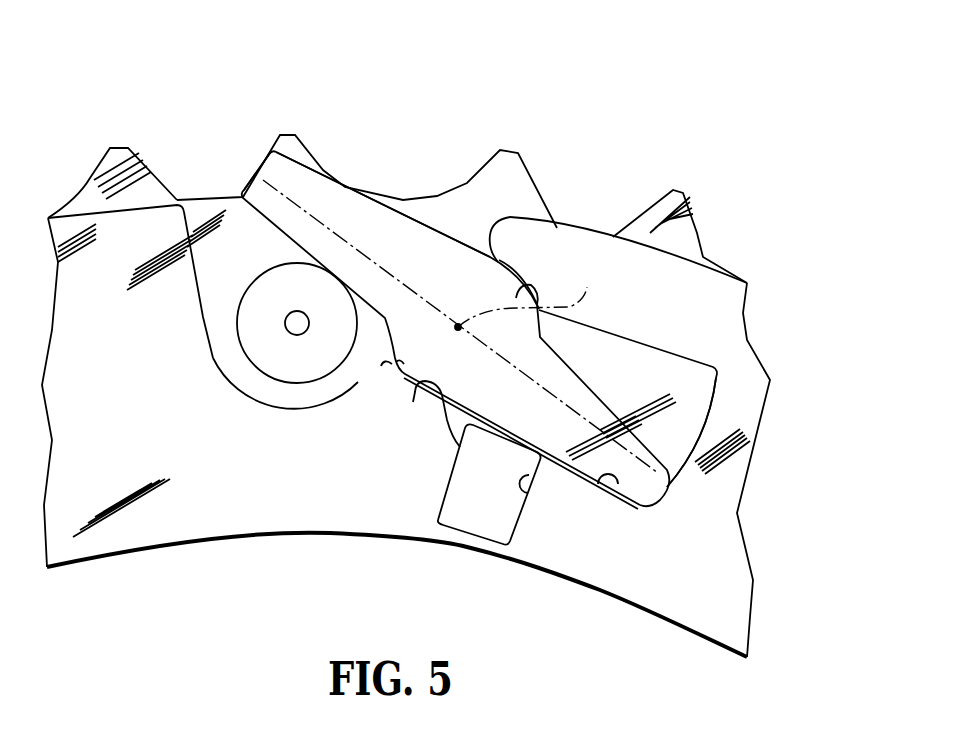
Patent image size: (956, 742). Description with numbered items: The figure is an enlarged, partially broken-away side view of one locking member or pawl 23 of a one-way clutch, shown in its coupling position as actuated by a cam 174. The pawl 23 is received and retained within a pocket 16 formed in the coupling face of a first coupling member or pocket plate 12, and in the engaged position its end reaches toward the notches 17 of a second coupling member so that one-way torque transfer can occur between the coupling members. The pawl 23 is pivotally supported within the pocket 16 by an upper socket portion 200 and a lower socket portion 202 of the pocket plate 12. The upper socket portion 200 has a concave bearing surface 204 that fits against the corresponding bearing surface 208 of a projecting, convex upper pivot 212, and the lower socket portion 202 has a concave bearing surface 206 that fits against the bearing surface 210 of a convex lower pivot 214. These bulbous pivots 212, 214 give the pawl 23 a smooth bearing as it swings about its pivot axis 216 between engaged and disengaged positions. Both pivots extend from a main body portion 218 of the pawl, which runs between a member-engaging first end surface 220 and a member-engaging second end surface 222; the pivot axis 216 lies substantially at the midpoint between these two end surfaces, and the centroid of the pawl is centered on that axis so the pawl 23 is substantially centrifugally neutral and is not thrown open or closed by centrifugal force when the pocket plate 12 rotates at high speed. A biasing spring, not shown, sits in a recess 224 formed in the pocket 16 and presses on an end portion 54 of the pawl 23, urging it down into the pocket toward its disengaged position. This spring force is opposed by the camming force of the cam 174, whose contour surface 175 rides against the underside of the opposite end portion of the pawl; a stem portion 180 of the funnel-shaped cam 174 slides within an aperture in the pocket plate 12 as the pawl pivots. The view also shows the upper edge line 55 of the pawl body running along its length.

The first coupling member 12 is at (735, 355).
The notches 17 is at (208, 175).
The upper socket portion 200 is at (505, 255).
The first end surface 220 is at (265, 172).
The lever arm upper edge 55 is at (323, 208).
The locking member 23 is at (433, 228).
The upper pivot 212 is at (505, 270).
The bearing surface of upper pivot 208 is at (520, 296).
The concave bearing surface 204 is at (537, 300).
The pivot axis 216 is at (535, 294).
The end portion 54 is at (540, 378).
The main body portion 218 is at (595, 400).
The second end surface 222 is at (670, 477).
The pocket 16 is at (618, 484).
The stem portion 180 is at (287, 325).
The contour surface 175 is at (273, 350).
The cam 174 is at (294, 386).
The lower pivot 214 is at (383, 364).
The bearing surface of lower pivot 210 is at (400, 372).
The lower socket portion 202 is at (410, 370).
The concave bearing surface 206 is at (460, 447).
The recess 224 is at (530, 495).